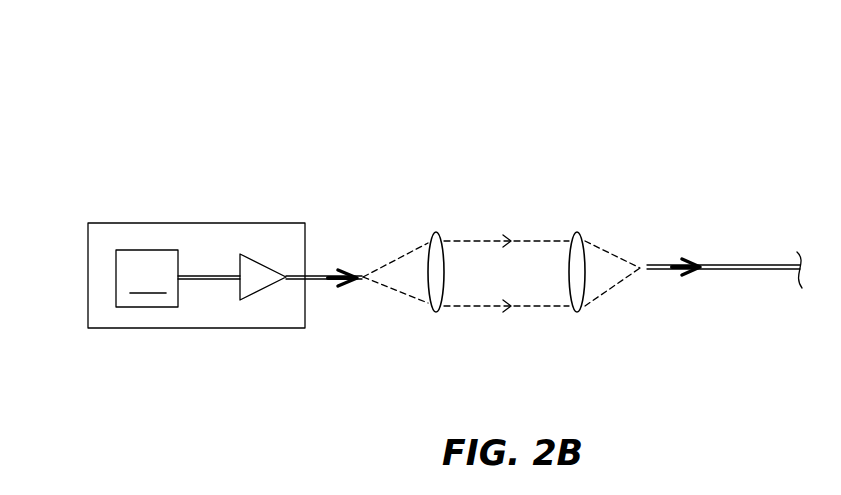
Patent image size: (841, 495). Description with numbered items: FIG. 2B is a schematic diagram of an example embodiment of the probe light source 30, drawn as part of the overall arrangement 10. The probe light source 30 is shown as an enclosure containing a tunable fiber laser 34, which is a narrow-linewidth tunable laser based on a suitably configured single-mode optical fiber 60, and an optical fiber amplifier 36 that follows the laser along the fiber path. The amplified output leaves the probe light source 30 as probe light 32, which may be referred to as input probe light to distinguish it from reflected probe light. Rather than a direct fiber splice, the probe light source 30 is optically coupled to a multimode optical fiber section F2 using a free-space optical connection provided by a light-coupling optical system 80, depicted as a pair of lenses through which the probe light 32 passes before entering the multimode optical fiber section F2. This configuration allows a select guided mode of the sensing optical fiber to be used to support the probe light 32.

The optical system 10 is at (113, 74).
The probe light source 30 is at (148, 223).
The tunable fiber laser 34 is at (147, 278).
The optical fiber amplifier 36 is at (254, 266).
The single-mode optical fiber 60 is at (213, 276).
The probe light 32 is at (337, 285).
The light-coupling optical system 80 is at (583, 223).
The multimode optical fiber section F2 is at (725, 265).